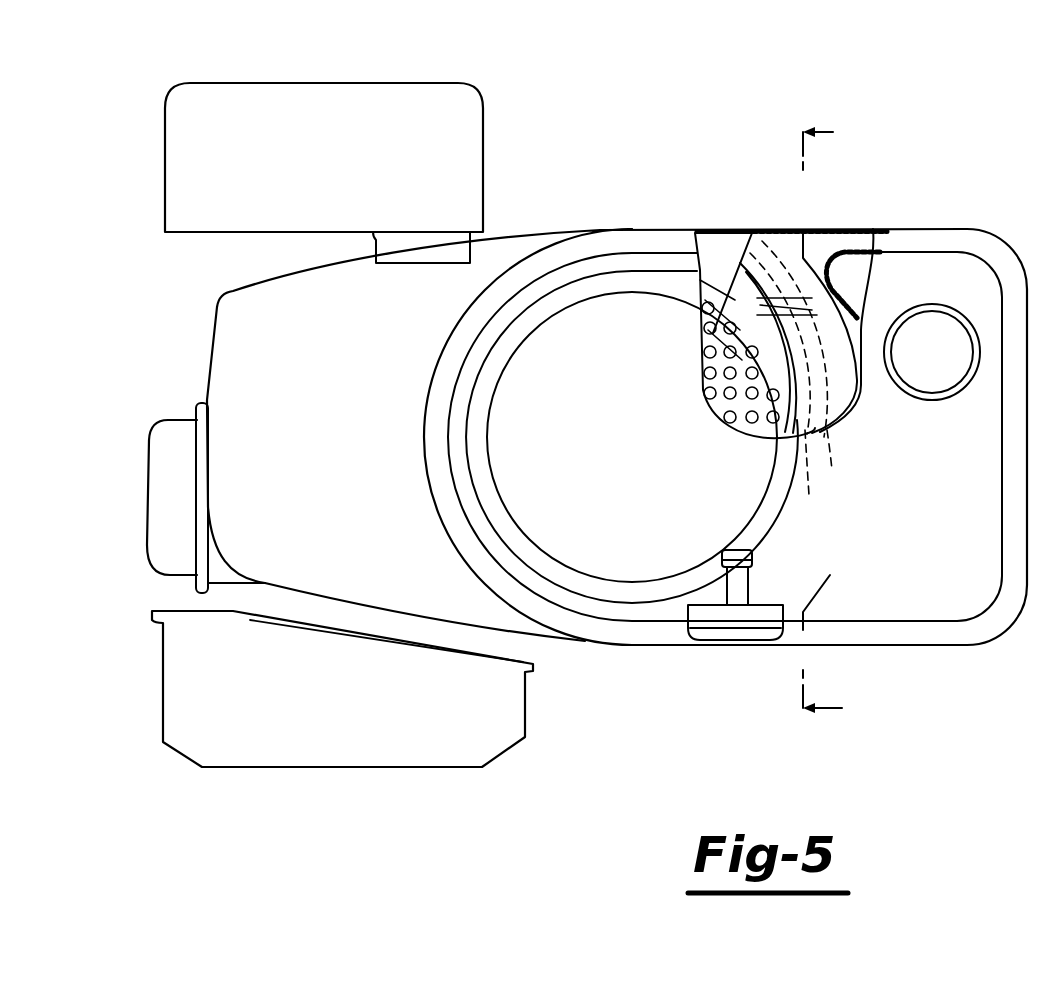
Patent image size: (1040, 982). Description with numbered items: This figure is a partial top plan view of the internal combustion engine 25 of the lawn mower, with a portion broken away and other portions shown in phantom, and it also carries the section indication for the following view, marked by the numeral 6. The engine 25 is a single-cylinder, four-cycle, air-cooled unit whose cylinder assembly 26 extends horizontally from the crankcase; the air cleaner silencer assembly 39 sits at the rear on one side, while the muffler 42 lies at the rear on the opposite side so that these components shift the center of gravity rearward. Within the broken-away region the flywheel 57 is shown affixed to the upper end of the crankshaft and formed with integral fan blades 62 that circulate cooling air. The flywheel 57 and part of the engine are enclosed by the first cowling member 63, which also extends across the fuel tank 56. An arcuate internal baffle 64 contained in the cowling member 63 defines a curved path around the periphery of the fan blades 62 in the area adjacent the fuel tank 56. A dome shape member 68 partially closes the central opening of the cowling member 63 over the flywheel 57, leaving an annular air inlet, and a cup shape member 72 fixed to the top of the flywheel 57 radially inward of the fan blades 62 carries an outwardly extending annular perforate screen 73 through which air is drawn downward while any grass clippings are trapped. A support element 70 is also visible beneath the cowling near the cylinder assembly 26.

The internal combustion engine 25 is at (166, 331).
The cylinder assembly 26 is at (136, 540).
The air cleaner silencer assembly 39 is at (470, 137).
The muffler 42 is at (428, 751).
The fuel tank 56 is at (868, 242).
The flywheel 57 is at (822, 430).
The fan blades 62 is at (813, 482).
The first cowling member 63 is at (893, 603).
The internal baffle 64 is at (775, 242).
The dome shape member 68 is at (603, 336).
The cup shape member 72 is at (723, 403).
The annular perforate screen 73 is at (726, 420).
The support foot 70 is at (735, 595).
The section line 6- 6 is at (838, 422).